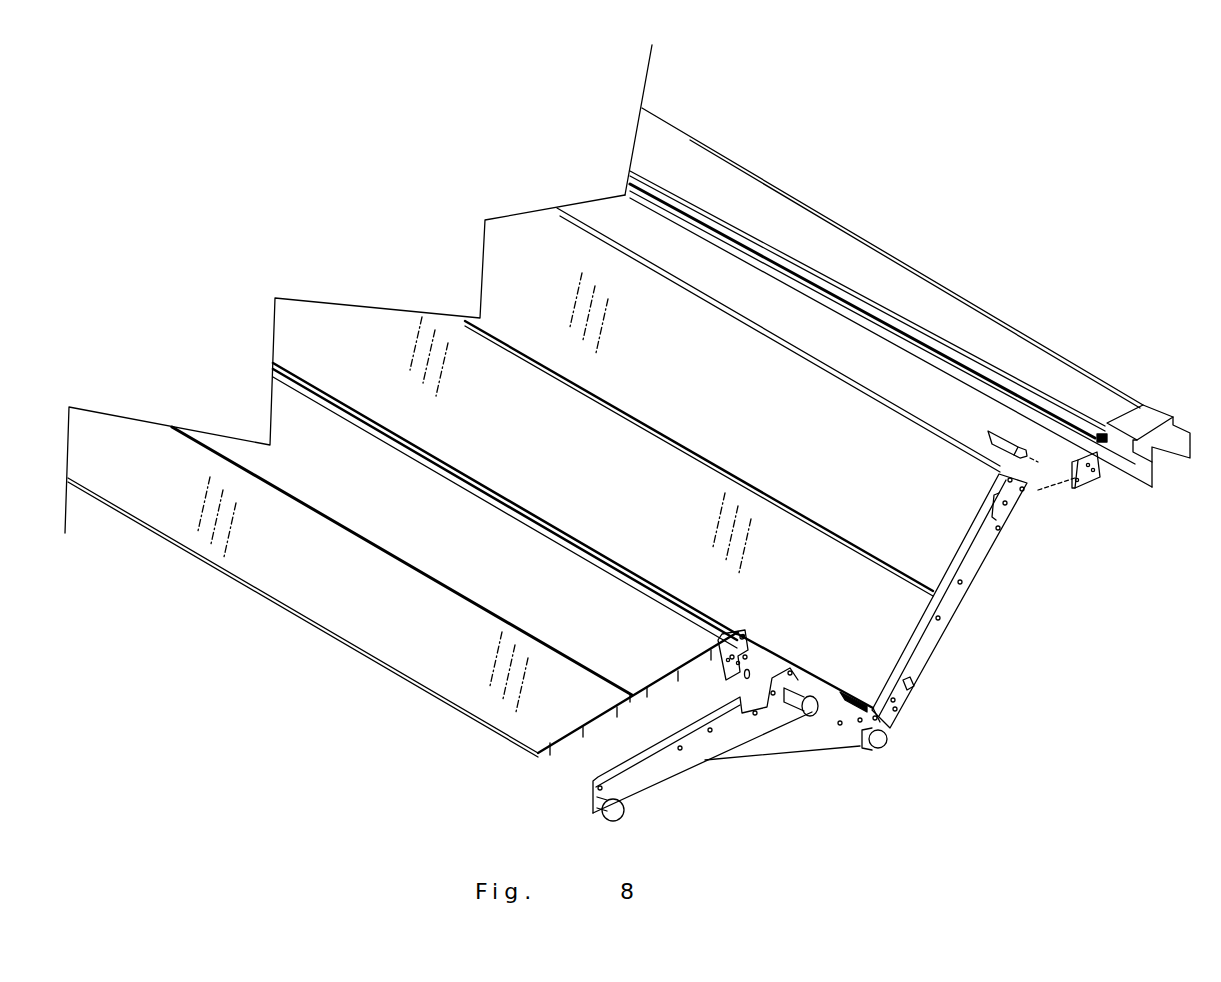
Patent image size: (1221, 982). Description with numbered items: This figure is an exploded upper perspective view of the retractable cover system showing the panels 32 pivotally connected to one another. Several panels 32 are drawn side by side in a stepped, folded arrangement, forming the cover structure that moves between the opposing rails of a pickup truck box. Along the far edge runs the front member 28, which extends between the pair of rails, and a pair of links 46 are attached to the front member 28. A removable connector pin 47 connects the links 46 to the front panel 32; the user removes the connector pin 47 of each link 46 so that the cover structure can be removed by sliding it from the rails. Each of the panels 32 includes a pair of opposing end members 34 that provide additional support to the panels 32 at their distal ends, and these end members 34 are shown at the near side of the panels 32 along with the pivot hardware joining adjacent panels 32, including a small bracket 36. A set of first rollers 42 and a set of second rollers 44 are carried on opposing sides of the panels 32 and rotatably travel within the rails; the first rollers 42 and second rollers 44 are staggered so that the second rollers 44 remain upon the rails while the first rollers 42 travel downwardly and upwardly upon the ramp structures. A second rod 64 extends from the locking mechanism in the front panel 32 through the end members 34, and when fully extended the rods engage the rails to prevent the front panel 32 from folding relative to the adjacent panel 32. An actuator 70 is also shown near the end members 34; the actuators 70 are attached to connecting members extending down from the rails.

The front member 28 is at (960, 320).
The panels 32 is at (498, 712).
The end members 34 is at (950, 600).
The hinge bracket 36 is at (725, 648).
The first rollers 42 is at (617, 800).
The second rollers 44 is at (810, 716).
The links 46 is at (1090, 474).
The connector pin 47 is at (993, 437).
The second rod 64 is at (915, 686).
The actuators 70 is at (877, 752).